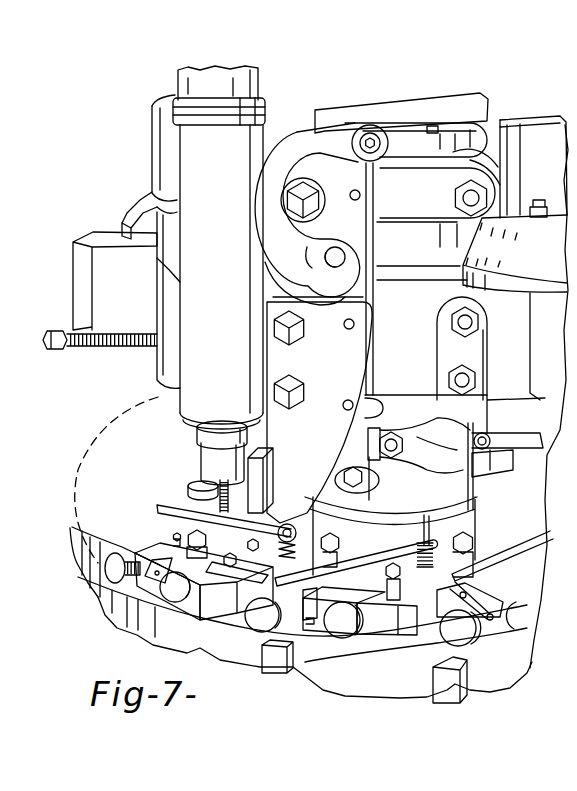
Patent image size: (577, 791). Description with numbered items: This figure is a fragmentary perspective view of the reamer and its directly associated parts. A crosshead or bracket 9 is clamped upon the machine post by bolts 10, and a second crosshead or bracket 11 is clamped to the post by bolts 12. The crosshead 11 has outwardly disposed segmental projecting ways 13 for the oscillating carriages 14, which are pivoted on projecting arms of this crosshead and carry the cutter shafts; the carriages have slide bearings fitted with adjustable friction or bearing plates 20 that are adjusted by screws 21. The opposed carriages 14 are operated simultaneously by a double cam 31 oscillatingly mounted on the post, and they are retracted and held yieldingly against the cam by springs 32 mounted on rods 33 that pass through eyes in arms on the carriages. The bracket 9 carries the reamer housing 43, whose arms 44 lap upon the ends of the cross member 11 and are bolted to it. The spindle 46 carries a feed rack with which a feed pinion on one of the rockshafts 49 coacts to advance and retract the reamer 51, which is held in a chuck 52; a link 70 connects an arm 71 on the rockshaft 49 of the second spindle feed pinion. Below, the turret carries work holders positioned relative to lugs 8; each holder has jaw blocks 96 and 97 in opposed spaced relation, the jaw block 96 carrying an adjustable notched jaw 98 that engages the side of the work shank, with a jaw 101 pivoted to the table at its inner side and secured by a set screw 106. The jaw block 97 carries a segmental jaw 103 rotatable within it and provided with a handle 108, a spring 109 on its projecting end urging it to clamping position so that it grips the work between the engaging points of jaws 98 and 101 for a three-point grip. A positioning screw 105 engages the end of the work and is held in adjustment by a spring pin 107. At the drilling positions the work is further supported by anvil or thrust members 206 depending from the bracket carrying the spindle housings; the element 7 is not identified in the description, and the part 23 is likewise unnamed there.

The base 7 is at (365, 678).
The lugs 8 is at (280, 664).
The crosshead or bracket 9 is at (408, 180).
The bolts 10 is at (462, 197).
The crosshead or bracket 11 is at (392, 297).
The bolts 12 is at (450, 377).
The segmental projecting ways 13 is at (77, 265).
The oscillating carriages 14 is at (142, 207).
The adjustable friction or bearing plates 20 is at (122, 228).
The screws 21 is at (538, 200).
The housing 23 is at (576, 115).
The double cam 31 is at (418, 468).
The springs 32 is at (120, 350).
The rods 33 is at (45, 343).
The reamer housing 43 is at (190, 313).
The arms 44 is at (374, 306).
The spindle 46 is at (200, 430).
The rockshafts 49 is at (338, 266).
The reamer 51 is at (190, 492).
The chucks 52 is at (203, 460).
The link 70 is at (438, 99).
The arm 71 is at (248, 202).
The jaw block 96 is at (208, 595).
The jaw block 97 is at (228, 610).
The adjustable jaw 98 is at (311, 622).
The jaw 101 is at (448, 562).
The segmental jaw 103 is at (284, 527).
The positioning screw 105 is at (118, 554).
The set screw 106 is at (175, 600).
The spring pin 107 is at (137, 583).
The handle 108 is at (362, 552).
The spring 109 is at (297, 538).
The anvil or thrust members 206 is at (258, 492).